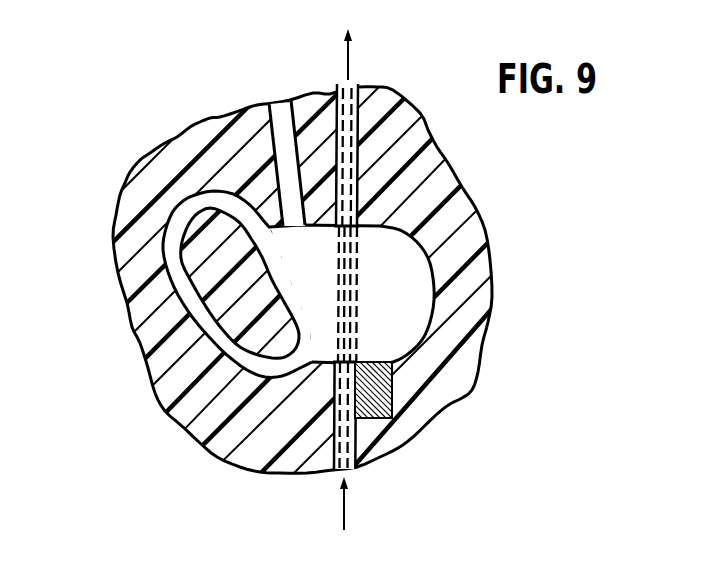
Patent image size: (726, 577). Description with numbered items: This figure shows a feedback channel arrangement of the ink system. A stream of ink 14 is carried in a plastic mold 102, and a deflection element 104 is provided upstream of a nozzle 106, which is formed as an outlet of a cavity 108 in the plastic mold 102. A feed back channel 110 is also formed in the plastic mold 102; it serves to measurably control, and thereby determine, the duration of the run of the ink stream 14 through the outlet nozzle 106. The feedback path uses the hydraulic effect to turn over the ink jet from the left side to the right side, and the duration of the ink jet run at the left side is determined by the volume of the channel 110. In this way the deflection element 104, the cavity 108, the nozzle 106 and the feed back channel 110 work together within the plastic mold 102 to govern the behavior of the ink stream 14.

The plastic mold 102 is at (465, 205).
The deflection element 104 is at (377, 400).
The nozzle 106 is at (281, 110).
The cavity 108 is at (418, 303).
The feed back channel 110 is at (195, 303).
The stream of ink 14 is at (345, 434).